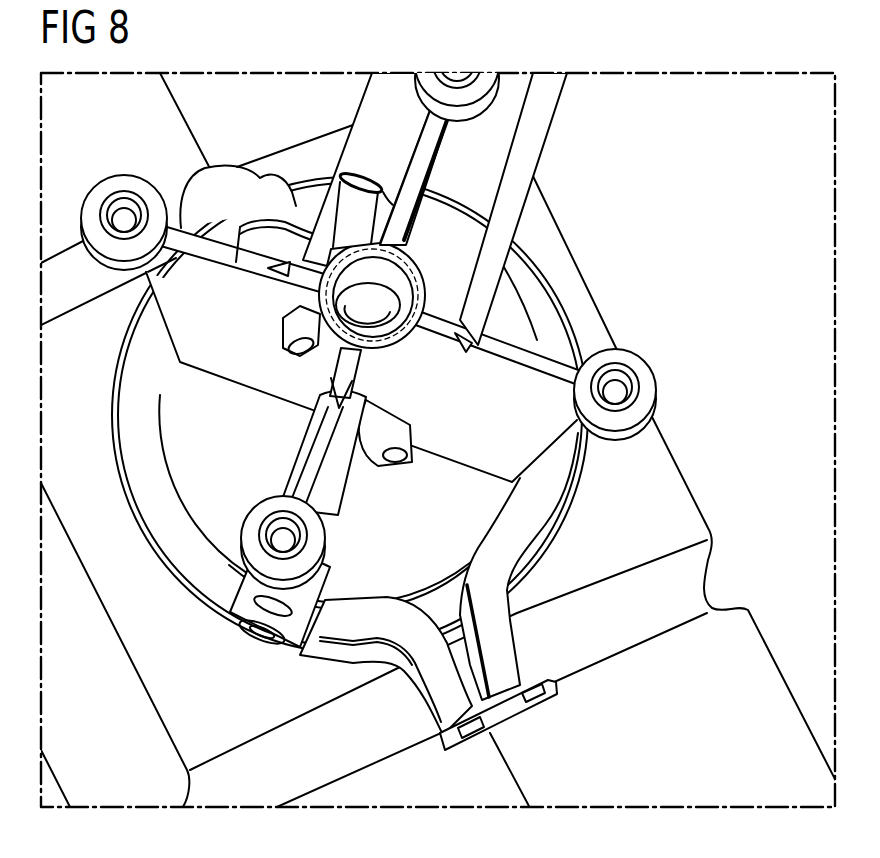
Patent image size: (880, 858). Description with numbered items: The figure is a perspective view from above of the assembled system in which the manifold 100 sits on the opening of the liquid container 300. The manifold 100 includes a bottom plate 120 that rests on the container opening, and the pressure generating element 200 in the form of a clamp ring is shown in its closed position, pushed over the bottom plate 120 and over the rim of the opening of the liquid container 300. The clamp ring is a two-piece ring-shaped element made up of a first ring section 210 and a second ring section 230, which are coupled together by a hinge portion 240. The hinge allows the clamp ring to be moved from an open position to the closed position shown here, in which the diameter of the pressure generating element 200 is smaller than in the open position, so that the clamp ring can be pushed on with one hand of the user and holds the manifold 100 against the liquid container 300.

The manifold 100 is at (517, 354).
The bottom plate 120 is at (478, 523).
The pressure generating element 200 is at (153, 476).
The first ring section 210 is at (137, 383).
The second ring section 230 is at (527, 293).
The hinge portion 240 is at (258, 210).
The liquid container 300 is at (662, 510).